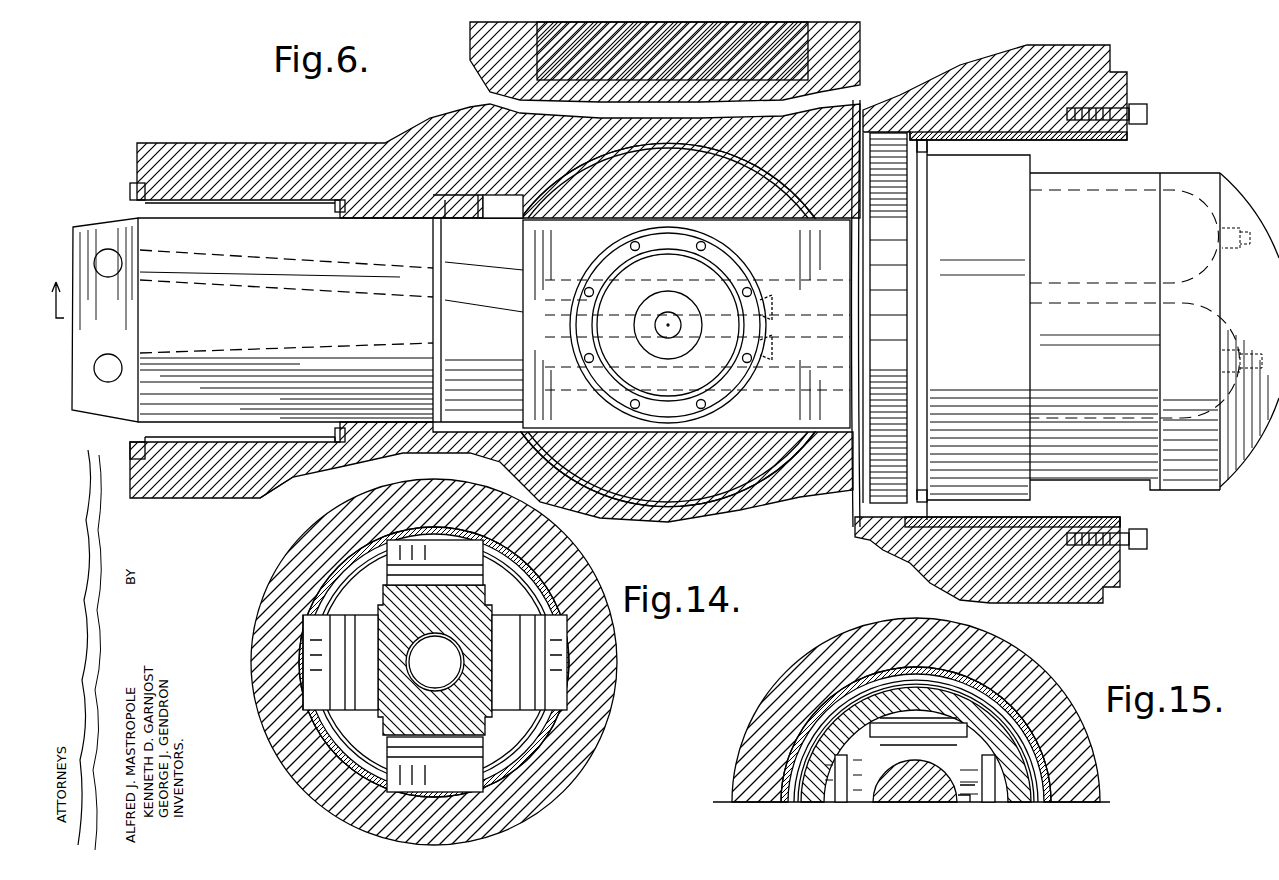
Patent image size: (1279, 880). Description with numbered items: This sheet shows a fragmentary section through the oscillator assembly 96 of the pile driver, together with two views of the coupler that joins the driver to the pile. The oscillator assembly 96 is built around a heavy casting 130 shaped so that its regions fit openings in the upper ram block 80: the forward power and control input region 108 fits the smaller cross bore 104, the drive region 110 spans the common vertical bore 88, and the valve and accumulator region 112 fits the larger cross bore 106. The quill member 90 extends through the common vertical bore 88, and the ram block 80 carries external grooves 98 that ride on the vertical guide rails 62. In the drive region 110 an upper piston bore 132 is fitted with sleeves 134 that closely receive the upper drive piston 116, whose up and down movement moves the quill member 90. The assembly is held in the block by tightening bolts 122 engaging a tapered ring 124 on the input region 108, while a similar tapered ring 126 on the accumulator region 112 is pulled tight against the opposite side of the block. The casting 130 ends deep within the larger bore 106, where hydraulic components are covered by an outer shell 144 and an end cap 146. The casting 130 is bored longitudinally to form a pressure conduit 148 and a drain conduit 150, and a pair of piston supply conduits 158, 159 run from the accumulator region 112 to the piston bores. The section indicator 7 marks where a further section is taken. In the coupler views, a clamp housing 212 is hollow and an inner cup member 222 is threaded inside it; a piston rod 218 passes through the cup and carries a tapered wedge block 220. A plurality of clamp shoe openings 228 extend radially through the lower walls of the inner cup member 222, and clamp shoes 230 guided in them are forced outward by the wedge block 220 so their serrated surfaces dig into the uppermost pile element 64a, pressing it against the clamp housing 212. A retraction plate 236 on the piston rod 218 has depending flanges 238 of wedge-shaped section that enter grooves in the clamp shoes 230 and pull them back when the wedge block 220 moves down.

In FIG. 6, the section line 7 is at (662, 294).
In FIG. 6, the vertical guide rails 62 is at (800, 58).
In FIG. 14, the pile element 64a is at (292, 665).
In FIG. 15, the pile element 64a is at (820, 648).
In FIG. 6, the upper ram block 80 is at (136, 160).
In FIG. 6, the common vertical bore 88 is at (530, 142).
In FIG. 6, the quill member 90 is at (570, 145).
In FIG. 6, the oscillator assembly 96 is at (1157, 145).
In FIG. 6, the external grooves 98 is at (472, 50).
In FIG. 6, the smaller cross bore 104 is at (208, 452).
In FIG. 6, the larger cross bore 106 is at (1122, 509).
In FIG. 6, the power and control input region 108 is at (268, 480).
In FIG. 6, the drive region 110 is at (510, 410).
In FIG. 6, the valve and accumulator region 112 is at (1035, 470).
In FIG. 6, the upper drive piston 116 is at (628, 285).
In FIG. 6, the tightening bolts 122 is at (336, 210).
In FIG. 6, the tapered ring 124 is at (458, 202).
In FIG. 6, the tapered ring 126 is at (892, 140).
In FIG. 6, the casting 130 is at (112, 420).
In FIG. 6, the upper piston bore 132 is at (590, 278).
In FIG. 6, the sleeves 134 is at (590, 382).
In FIG. 6, the outer shell 144 is at (1165, 178).
In FIG. 6, the end cap 146 is at (1243, 212).
In FIG. 6, the pressure conduit 148 is at (225, 380).
In FIG. 6, the drain conduit 150 is at (228, 275).
In FIG. 6, the piston supply conduit 158 is at (815, 398).
In FIG. 6, the piston supply conduit 159 is at (818, 246).
In FIG. 14, the clamp housing 212 is at (280, 592).
In FIG. 15, the clamp housing 212 is at (775, 690).
In FIG. 14, the piston rod 218 is at (440, 640).
In FIG. 15, the piston rod 218 is at (888, 796).
In FIG. 14, the tapered wedge block 220 is at (560, 765).
In FIG. 14, the inner cup member 222 is at (303, 572).
In FIG. 15, the inner cup member 222 is at (870, 690).
In FIG. 14, the clamp shoe openings 228 is at (392, 545).
In FIG. 14, the clamp shoes 230 is at (318, 690).
In FIG. 15, the retraction plate 236 is at (968, 804).
In FIG. 15, the depending flanges 238 is at (838, 760).